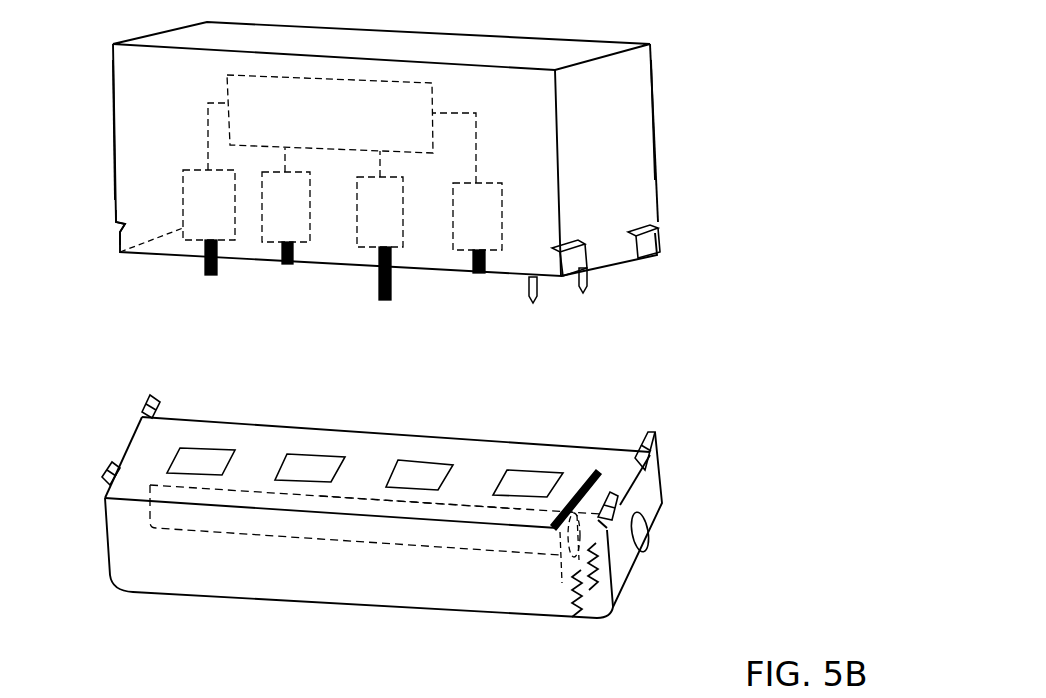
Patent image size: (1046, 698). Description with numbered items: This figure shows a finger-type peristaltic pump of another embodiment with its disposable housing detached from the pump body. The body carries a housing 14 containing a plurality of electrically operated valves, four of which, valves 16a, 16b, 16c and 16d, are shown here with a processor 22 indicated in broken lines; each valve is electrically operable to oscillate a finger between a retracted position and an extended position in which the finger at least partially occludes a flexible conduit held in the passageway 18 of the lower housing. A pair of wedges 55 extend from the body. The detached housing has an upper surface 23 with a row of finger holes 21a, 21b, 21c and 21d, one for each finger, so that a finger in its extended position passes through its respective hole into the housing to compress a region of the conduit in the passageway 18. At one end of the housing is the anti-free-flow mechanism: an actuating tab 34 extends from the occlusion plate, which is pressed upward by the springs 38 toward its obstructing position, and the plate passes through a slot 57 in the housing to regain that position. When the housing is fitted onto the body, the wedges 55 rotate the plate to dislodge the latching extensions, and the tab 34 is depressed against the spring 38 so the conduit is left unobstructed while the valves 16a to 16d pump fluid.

The housing 14 is at (655, 100).
The electrically operated valve 16a is at (188, 222).
The electrically operated valve 16b is at (266, 224).
The electrically operated valve 16c is at (360, 227).
The electrically operated valve 16d is at (498, 232).
The passageway 18 is at (208, 520).
The finger hole 21a is at (198, 462).
The finger hole 21b is at (307, 470).
The finger hole 21c is at (418, 475).
The finger hole 21d is at (533, 483).
The processor 22 is at (318, 142).
The upper surface 23 is at (340, 488).
The actuating tab 34 is at (573, 487).
The springs 38 is at (590, 590).
The wedges 55 is at (534, 300).
The slot 57 is at (592, 475).